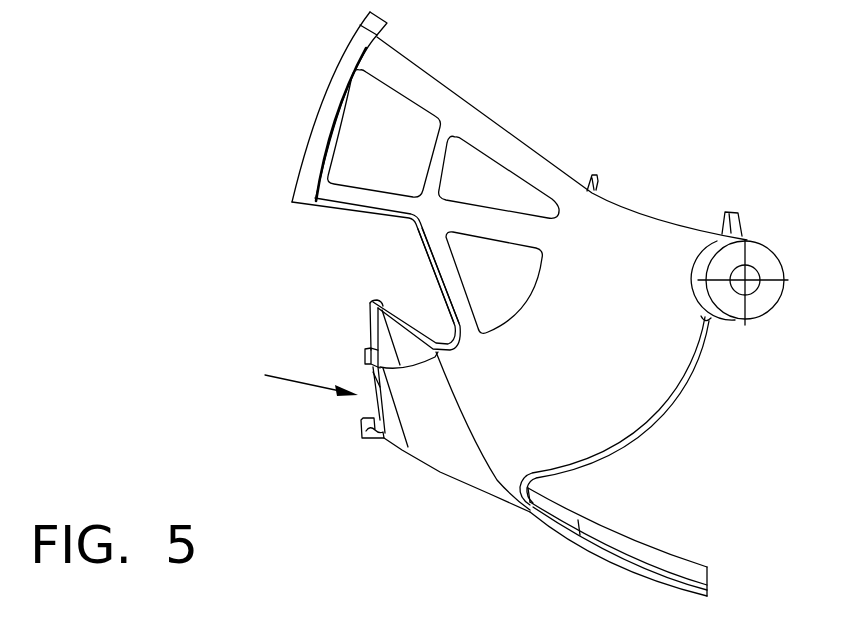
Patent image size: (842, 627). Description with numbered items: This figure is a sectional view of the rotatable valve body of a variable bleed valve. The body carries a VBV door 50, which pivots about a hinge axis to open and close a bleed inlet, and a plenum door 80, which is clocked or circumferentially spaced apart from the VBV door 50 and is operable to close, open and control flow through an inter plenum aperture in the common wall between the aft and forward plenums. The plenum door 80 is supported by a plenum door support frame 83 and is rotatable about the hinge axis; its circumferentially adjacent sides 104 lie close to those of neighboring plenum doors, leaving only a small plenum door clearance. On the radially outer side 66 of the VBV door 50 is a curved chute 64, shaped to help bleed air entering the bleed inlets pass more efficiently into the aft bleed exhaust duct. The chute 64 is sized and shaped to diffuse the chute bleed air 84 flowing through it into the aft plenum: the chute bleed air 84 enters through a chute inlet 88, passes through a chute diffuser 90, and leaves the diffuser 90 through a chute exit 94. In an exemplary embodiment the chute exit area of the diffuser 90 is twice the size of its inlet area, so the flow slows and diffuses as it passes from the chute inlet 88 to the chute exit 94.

The VBV door 50 is at (505, 502).
The chute 64 is at (617, 377).
The radially outer side 66 is at (612, 537).
The plenum door 80 is at (318, 102).
The plenum door support frame 83 is at (423, 250).
The chute bleed air 84 is at (295, 387).
The chute inlet 88 is at (365, 407).
The chute diffuser 90 is at (623, 283).
The chute exit 94 is at (630, 203).
The circumferentially adjacent sides 104 is at (345, 75).